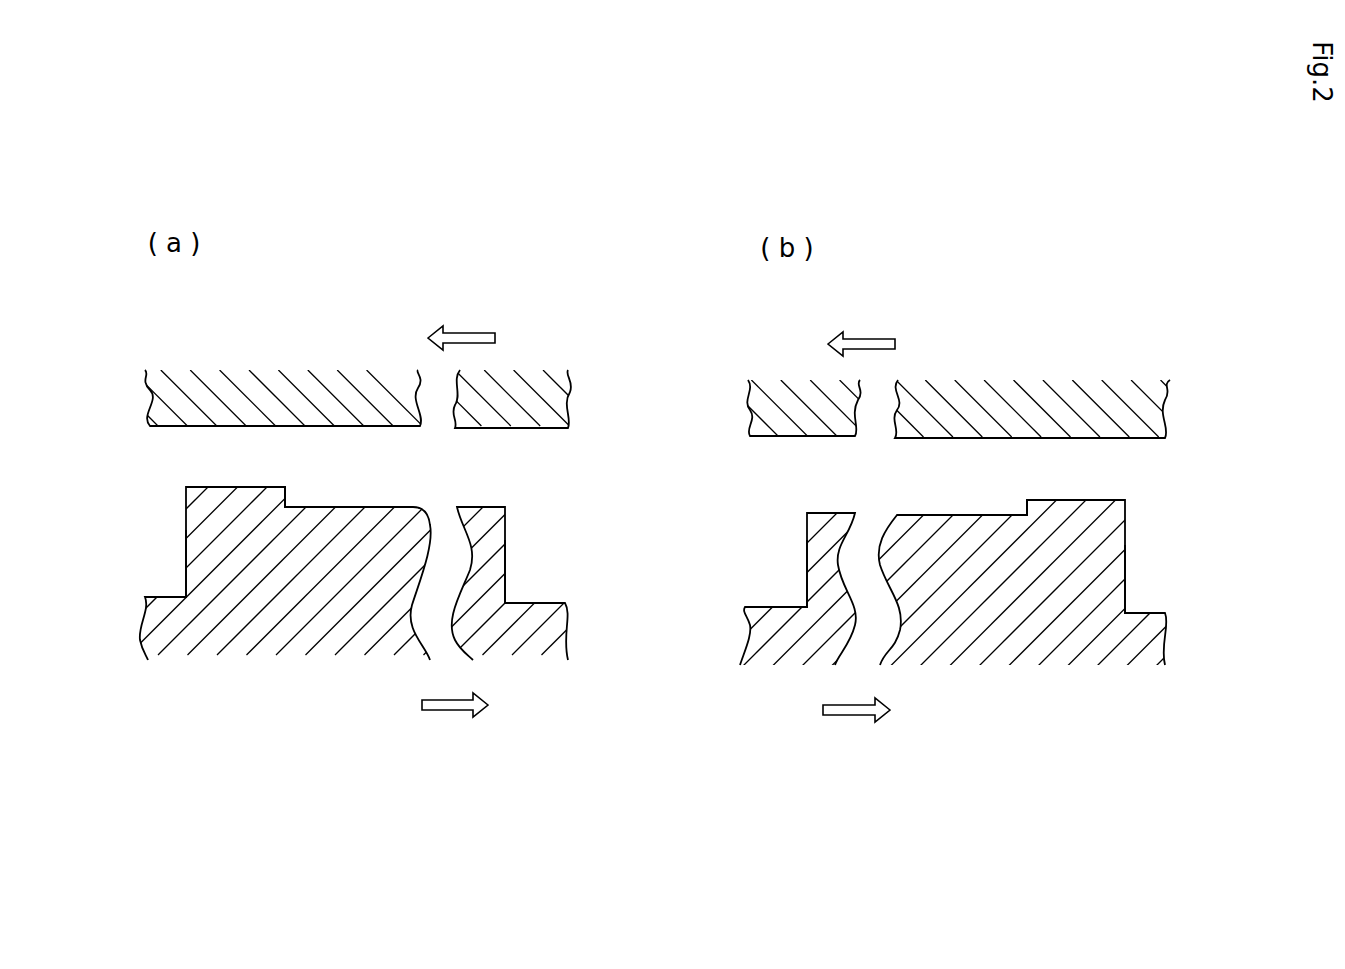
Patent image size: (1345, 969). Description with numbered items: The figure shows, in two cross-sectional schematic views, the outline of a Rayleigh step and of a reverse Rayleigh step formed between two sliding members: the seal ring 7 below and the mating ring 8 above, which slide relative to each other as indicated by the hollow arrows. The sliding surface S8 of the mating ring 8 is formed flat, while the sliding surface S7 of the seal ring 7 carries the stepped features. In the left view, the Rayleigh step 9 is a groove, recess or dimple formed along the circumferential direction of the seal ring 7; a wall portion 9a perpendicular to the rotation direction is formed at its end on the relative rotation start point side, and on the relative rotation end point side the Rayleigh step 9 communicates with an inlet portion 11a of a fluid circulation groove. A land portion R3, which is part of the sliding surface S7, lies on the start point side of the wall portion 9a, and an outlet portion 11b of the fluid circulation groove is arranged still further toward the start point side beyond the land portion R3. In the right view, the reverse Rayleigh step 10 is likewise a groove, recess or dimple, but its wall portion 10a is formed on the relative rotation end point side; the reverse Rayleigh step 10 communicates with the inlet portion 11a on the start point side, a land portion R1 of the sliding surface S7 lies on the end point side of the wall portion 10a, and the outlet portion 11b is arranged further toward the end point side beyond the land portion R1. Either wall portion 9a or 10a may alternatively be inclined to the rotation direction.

The seal ring 7 is at (240, 652).
The mating ring 8 is at (245, 386).
The Rayleigh step 9 is at (381, 507).
The wall portion 9a is at (298, 494).
The reverse Rayleigh step 10 is at (912, 508).
The wall portion 10a is at (1026, 507).
The inlet portion 11a is at (520, 603).
The outlet portion 11b is at (168, 598).
The sliding surface S7 is at (243, 485).
The sliding surface S8 is at (196, 382).
The land portion R1 is at (1095, 500).
The land portion R3 is at (217, 487).